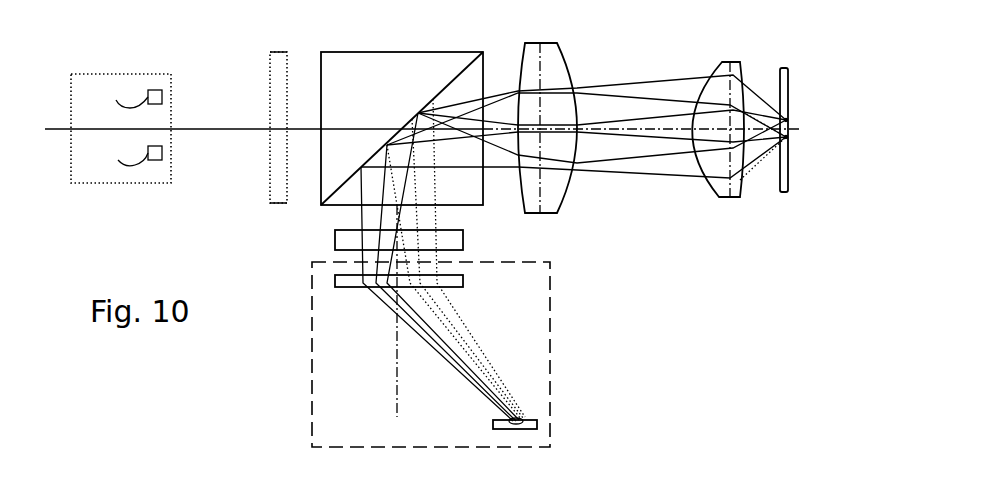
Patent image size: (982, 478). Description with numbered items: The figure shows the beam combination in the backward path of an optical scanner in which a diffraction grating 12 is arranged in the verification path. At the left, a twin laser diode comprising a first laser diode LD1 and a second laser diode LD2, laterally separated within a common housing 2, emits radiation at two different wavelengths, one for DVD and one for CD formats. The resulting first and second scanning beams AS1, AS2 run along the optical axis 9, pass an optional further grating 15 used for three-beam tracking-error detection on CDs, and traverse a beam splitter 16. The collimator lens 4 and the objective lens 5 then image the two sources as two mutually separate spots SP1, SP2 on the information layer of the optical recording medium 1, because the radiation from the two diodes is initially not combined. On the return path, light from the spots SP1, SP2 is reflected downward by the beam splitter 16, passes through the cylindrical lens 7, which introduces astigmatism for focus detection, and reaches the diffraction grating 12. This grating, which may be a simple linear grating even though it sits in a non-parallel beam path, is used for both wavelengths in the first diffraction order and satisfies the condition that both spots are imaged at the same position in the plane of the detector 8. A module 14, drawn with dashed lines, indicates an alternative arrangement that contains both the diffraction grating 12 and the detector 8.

The optical recording medium 1 is at (790, 78).
The common housing 2 is at (121, 102).
The collimator lens 4 is at (530, 60).
The objective lens 5 is at (722, 68).
The cylindrical lens 7 is at (463, 240).
The detector 8 is at (537, 424).
The optical axis 9 is at (206, 128).
The diffraction grating 12 is at (463, 280).
The module 14 is at (462, 273).
The further grating 15 is at (282, 60).
The beam splitter 16 is at (398, 64).
The first scanning beam AS1 is at (668, 170).
The second scanning beam AS2 is at (647, 90).
The first spot SP1 is at (788, 136).
The second spot SP2 is at (787, 120).
The first laser diode LD1 is at (119, 158).
The second laser diode LD2 is at (119, 101).